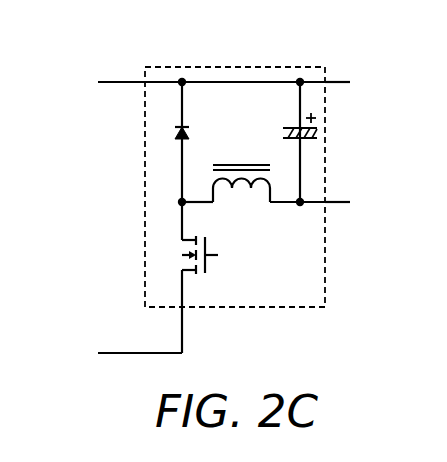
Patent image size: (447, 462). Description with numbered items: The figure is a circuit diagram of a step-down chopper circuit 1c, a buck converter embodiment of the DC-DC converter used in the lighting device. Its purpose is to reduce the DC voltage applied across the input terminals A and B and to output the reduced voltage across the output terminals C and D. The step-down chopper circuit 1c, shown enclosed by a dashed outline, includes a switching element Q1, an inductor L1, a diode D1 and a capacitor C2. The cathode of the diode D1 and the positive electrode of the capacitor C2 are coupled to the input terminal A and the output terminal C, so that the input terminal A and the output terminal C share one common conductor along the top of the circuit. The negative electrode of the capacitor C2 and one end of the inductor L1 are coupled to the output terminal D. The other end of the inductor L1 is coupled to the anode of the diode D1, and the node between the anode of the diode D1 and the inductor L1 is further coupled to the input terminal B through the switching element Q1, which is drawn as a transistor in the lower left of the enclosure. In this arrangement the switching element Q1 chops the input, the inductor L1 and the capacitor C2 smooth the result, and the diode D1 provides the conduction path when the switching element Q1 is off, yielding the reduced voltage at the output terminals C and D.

The step-down chopper circuit 1c is at (236, 67).
The diode D1 is at (202, 134).
The capacitor C2 is at (284, 129).
The inductor L1 is at (241, 195).
The switching element Q1 is at (211, 265).
The input terminal A is at (113, 82).
The input terminal B is at (113, 353).
The output terminal C is at (348, 82).
The output terminal D is at (349, 202).